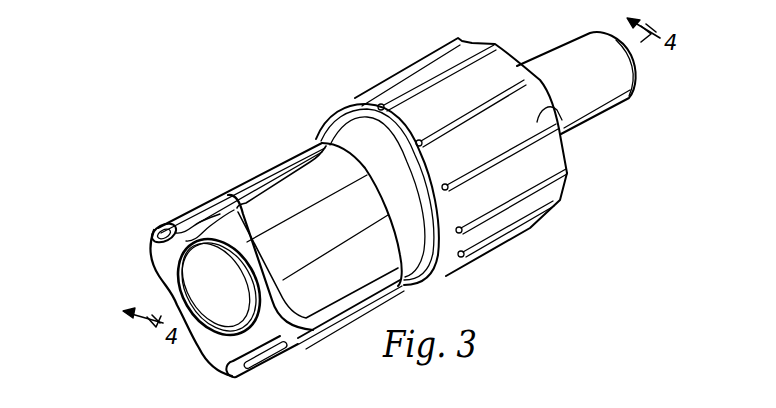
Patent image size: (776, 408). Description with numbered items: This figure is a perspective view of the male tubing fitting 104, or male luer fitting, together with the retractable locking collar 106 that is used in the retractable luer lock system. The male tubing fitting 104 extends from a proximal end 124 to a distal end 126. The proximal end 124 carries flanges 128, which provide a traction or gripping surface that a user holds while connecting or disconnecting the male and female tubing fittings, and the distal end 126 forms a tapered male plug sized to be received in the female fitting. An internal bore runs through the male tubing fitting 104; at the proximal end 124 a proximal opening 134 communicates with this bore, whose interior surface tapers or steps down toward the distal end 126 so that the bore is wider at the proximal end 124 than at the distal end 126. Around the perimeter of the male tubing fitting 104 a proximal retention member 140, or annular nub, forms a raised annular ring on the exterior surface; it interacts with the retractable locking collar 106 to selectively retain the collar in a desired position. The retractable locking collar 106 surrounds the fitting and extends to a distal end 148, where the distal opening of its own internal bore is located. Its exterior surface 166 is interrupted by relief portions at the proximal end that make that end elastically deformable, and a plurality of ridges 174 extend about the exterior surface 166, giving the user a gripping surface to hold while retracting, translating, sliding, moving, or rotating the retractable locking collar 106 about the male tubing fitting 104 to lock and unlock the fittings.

The male tubing fitting 104 is at (297, 344).
The retractable locking collar 106 is at (531, 224).
The proximal end 124 is at (200, 360).
The distal end 126 is at (653, 97).
The flanges 128 is at (269, 165).
The proximal opening 134 is at (204, 258).
The proximal retention member 140 is at (398, 128).
The distal end 148 is at (584, 175).
The exterior surface 166 is at (352, 133).
The ridges 174 is at (540, 78).